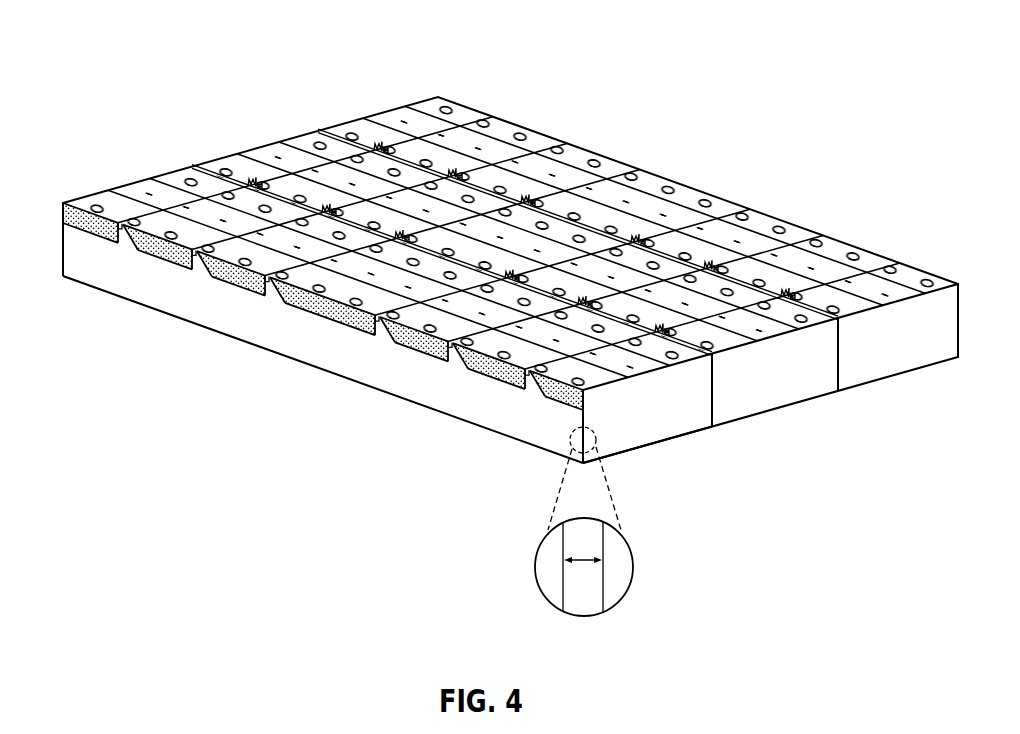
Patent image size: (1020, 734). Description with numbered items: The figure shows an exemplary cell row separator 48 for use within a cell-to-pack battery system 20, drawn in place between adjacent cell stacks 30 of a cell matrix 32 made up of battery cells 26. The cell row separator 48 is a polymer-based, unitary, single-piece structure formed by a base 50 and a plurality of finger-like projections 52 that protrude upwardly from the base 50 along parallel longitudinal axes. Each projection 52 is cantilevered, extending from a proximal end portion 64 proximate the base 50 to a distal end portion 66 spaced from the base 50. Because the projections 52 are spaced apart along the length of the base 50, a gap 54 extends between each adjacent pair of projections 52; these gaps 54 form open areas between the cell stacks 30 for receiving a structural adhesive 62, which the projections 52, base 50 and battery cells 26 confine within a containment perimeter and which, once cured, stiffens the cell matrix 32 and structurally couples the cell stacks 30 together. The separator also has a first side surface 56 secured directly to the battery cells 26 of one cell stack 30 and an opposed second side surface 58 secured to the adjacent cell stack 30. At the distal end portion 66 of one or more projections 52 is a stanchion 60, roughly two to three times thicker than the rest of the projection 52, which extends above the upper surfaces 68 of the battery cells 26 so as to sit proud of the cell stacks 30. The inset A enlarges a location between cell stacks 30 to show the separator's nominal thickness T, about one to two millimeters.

The cell-to-pack battery system 20 is at (836, 46).
The battery cells 26 is at (282, 180).
The cell stacks 30 is at (900, 346).
The cell matrix 32 is at (700, 185).
The cell row separator 48 is at (557, 207).
The base 50 is at (587, 470).
The projections 52 is at (330, 208).
The gap 54 is at (176, 266).
The first side surface 56 is at (705, 398).
The second side surface 58 is at (719, 397).
The stanchion 60 is at (126, 215).
The structural adhesive 62 is at (134, 253).
The proximal end portion 64 is at (117, 262).
The distal end portion 66 is at (118, 219).
The upper surfaces 68 is at (80, 201).
The inset A is at (634, 567).
The thickness T is at (583, 566).